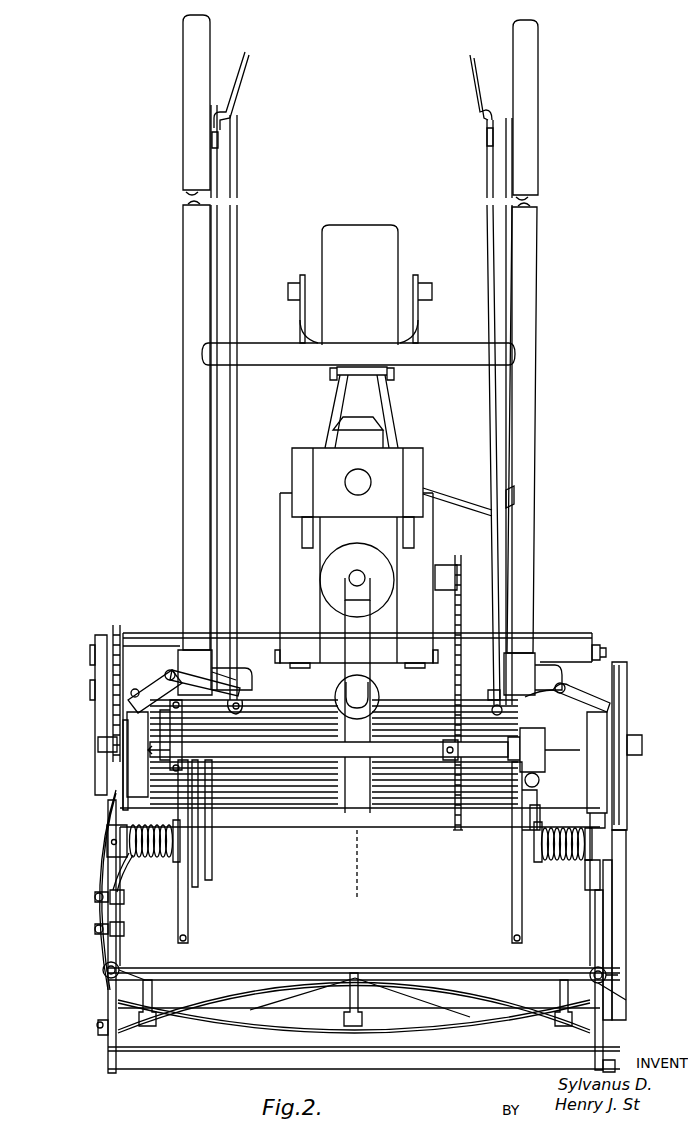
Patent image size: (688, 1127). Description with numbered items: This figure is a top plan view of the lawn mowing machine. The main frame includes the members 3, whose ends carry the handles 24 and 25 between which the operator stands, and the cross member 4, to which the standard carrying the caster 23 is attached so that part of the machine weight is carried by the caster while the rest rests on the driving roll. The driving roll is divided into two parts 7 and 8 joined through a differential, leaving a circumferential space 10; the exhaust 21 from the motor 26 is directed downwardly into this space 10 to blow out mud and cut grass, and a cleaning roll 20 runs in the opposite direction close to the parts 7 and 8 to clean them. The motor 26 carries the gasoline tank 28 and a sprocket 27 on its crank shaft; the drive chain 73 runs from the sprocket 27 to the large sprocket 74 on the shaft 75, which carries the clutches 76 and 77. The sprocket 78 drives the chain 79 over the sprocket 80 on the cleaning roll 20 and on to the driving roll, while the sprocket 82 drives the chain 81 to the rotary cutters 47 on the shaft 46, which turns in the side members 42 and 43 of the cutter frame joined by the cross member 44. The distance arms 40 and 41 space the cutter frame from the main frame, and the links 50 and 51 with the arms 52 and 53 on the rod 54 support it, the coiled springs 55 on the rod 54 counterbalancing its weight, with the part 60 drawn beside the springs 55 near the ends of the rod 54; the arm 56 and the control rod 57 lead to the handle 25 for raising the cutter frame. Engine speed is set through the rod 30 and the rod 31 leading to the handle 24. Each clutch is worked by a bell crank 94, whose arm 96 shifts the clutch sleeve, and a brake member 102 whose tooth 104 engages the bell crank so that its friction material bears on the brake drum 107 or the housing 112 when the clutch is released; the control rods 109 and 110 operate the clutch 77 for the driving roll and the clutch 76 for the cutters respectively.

The main frame member 3 is at (186, 497).
The cross member 4 is at (439, 368).
The driving roll part 7 is at (432, 806).
The driving roll part 8 is at (296, 806).
The space 10 is at (364, 798).
The cleaning roll 20 is at (163, 633).
The exhaust 21 is at (373, 700).
The caster 23 is at (383, 236).
The handle 24 is at (530, 105).
The handle 25 is at (186, 78).
The motor 26 is at (322, 598).
The sprocket 27 is at (460, 562).
The gasoline tank 28 is at (393, 458).
The rod 30 is at (452, 500).
The rod 31 is at (510, 306).
The distance arm 40 is at (612, 870).
The distance arm 41 is at (100, 878).
The cutter frame side member 42 is at (600, 1000).
The cutter frame side member 43 is at (110, 996).
The cross member 44 is at (398, 1062).
The shaft 46 is at (472, 978).
The rotary cutters 47 is at (462, 1018).
The link 50 is at (605, 912).
The link 51 is at (100, 922).
The arm 52 is at (572, 868).
The arm 53 is at (132, 875).
The rod 54 is at (358, 890).
The coiled spring 55 is at (134, 842).
The arm 56 is at (212, 860).
The control rod 57 is at (216, 546).
The spring seat 60 is at (173, 858).
The drive chain 73 is at (461, 622).
The large sprocket 74 is at (470, 684).
The shaft 75 is at (362, 753).
The clutch 76 is at (556, 754).
The clutch 77 is at (212, 750).
The sprocket 78 is at (106, 752).
The chain 79 is at (108, 720).
The sprocket 80 is at (112, 626).
The chain 81 is at (624, 720).
The sprocket 82 is at (642, 744).
The bell crank 94 is at (240, 696).
The bell crank arm 96 is at (180, 745).
The brake member 102 is at (612, 703).
The tooth 104 is at (184, 687).
The brake drum 107 is at (140, 768).
The control rod 109 is at (236, 404).
The control rod 110 is at (508, 566).
The housing 112 is at (607, 774).